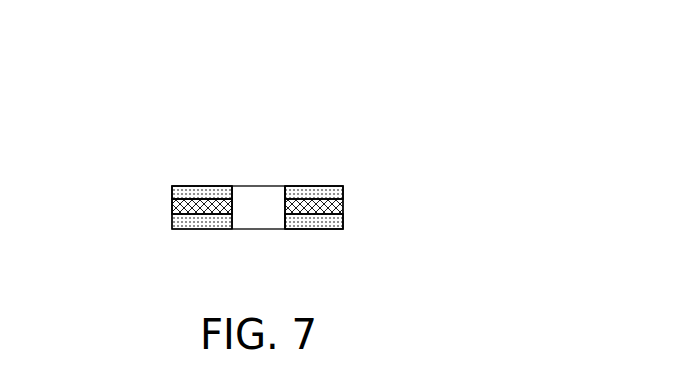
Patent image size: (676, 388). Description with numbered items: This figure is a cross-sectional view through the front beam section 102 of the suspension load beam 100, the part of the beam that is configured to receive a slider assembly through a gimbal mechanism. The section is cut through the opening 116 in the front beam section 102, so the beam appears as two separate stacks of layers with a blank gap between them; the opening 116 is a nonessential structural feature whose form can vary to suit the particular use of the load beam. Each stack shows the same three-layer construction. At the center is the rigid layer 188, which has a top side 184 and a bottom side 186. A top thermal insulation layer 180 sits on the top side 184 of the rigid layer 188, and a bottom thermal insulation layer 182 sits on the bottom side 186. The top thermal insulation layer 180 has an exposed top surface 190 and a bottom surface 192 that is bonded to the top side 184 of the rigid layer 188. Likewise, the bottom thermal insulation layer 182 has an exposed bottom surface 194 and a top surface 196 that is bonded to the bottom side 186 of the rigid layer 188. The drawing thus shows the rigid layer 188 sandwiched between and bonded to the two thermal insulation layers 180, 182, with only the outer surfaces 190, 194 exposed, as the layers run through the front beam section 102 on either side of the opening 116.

The suspension load beam 100 is at (414, 92).
The front beam section 102 is at (172, 207).
The opening 116 is at (238, 186).
The top thermal insulation layer 180 is at (343, 192).
The bottom thermal insulation layer 182 is at (343, 222).
The top side of rigid layer 184 is at (312, 186).
The bottom side of rigid layer 186 is at (312, 222).
The rigid layer 188 is at (343, 207).
The exposed top surface 190 is at (222, 178).
The bottom surface of top thermal insulation layer 192 is at (222, 208).
The exposed bottom surface 194 is at (188, 237).
The top surface of bottom thermal insulation layer 196 is at (186, 201).